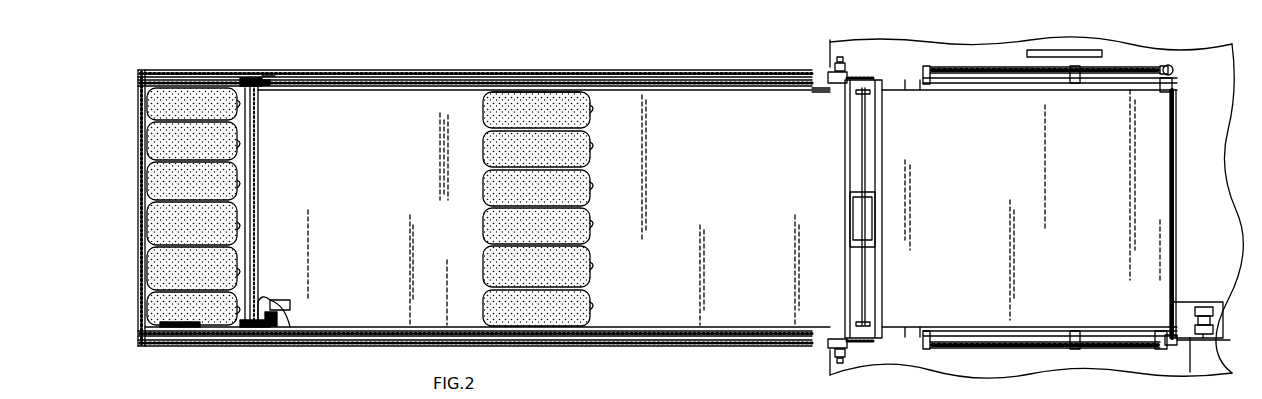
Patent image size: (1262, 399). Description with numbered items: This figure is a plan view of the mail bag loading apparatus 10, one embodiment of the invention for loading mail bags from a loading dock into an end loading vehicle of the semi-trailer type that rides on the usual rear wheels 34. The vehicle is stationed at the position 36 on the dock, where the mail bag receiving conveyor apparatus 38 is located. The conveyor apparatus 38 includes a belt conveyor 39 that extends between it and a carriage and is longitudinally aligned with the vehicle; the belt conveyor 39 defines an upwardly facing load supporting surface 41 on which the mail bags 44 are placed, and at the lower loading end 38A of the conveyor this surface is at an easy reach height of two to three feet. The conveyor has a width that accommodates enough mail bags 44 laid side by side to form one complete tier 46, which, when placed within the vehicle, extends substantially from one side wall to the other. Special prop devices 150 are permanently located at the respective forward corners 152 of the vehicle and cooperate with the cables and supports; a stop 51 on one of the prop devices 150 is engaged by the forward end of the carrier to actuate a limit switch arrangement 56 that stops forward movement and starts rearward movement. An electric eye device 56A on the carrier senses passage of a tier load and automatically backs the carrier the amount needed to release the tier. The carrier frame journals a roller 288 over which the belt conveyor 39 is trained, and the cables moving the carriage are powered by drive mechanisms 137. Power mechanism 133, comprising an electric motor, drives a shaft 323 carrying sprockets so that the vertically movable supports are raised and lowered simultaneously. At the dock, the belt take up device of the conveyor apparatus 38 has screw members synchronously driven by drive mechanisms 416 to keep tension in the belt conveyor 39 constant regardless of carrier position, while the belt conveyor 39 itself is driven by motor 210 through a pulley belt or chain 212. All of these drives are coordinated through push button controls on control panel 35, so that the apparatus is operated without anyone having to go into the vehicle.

The mail bag loading apparatus 10 is at (116, 255).
The forward corners 152 is at (135, 74).
The prop devices 150 is at (172, 98).
The stop 51 is at (192, 327).
The mail bags 44 is at (527, 100).
The tier 46 is at (562, 92).
The belt conveyor 39 is at (765, 171).
The electric eye device 56A is at (246, 80).
The limit switch arrangement 56 is at (246, 333).
The roller 288 is at (272, 314).
The drive mechanisms 137 is at (829, 60).
The shaft 323 is at (868, 290).
The power mechanism 133 is at (880, 230).
The position 36 is at (873, 57).
The rear wheels 34 is at (680, 395).
The load supporting surface 41 is at (1110, 190).
The mail bag receiving conveyor apparatus 38 is at (1100, 362).
The drive mechanisms 416 is at (1183, 66).
The control panel 35 is at (1084, 51).
The loading end 38A is at (1176, 233).
The motor 210 is at (1206, 306).
The pulley belt or chain 212 is at (1190, 370).